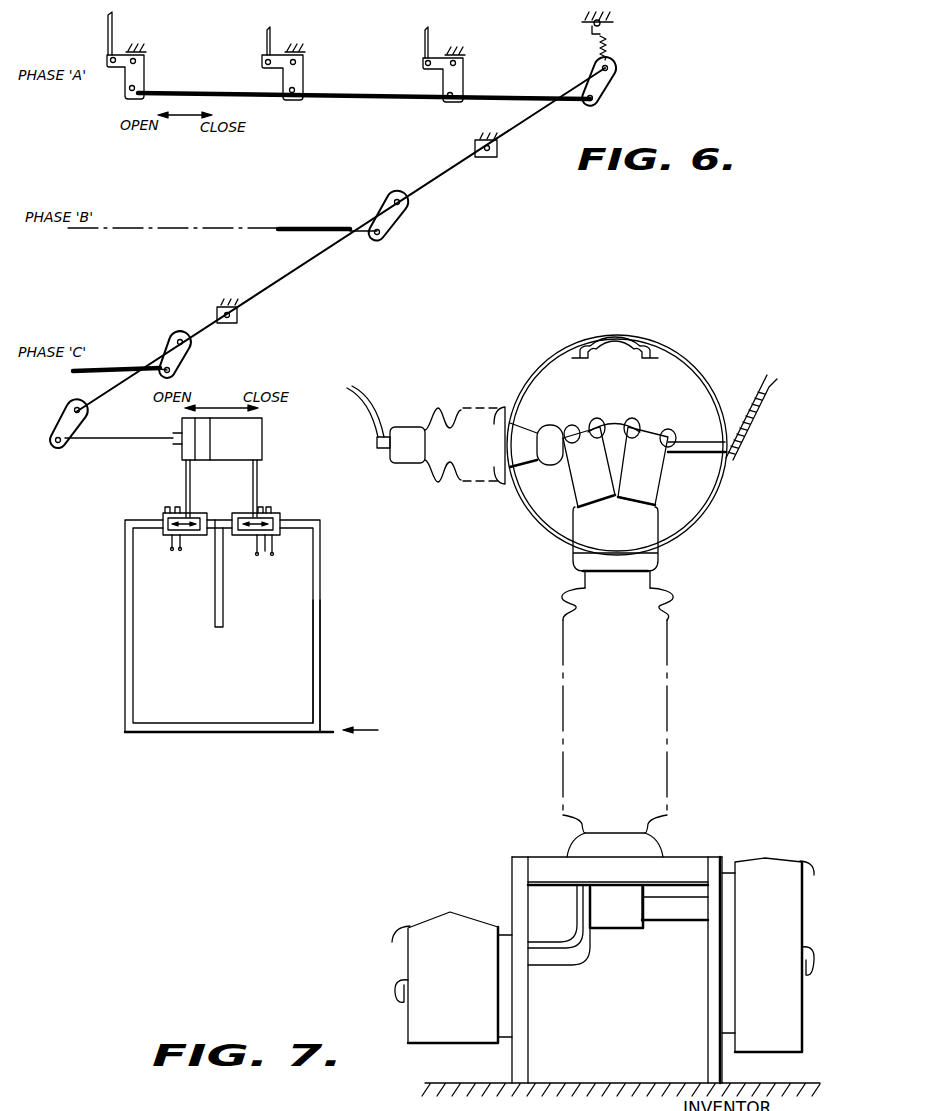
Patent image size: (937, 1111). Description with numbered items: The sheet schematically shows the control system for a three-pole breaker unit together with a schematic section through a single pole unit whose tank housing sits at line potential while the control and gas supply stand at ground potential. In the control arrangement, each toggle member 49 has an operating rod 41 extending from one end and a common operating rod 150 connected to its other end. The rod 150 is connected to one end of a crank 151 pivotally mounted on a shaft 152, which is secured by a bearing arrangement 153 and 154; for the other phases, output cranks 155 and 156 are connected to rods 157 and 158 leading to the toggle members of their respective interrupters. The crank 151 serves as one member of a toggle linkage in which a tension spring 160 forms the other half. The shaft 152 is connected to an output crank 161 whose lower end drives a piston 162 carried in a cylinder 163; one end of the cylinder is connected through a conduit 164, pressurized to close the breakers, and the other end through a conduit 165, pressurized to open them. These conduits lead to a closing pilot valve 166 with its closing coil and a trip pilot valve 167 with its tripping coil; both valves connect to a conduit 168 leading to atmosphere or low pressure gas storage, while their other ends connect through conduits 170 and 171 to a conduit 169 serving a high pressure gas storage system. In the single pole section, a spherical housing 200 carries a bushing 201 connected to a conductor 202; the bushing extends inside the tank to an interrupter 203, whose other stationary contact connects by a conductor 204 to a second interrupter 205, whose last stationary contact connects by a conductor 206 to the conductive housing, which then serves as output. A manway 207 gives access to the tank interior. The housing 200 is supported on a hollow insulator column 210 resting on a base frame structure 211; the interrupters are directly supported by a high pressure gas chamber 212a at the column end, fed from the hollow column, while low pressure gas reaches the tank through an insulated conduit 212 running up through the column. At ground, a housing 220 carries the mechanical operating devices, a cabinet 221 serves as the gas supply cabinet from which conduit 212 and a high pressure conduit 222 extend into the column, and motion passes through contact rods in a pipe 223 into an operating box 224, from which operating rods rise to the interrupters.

In FIG. 6, the operating rod 41 is at (115, 30).
In FIG. 6, the toggle member 49 is at (145, 67).
In FIG. 6, the common operating rod 150 is at (403, 79).
In FIG. 6, the crank 151 is at (612, 82).
In FIG. 6, the shaft 152 is at (537, 117).
In FIG. 6, the bearing arrangement 153 is at (483, 158).
In FIG. 6, the bearing arrangement 154 is at (238, 316).
In FIG. 6, the output crank 155 is at (402, 217).
In FIG. 6, the output crank 156 is at (188, 355).
In FIG. 6, the rod 157 is at (342, 208).
In FIG. 6, the rod 158 is at (128, 363).
In FIG. 6, the tension spring 160 is at (597, 43).
In FIG. 6, the output crank 161 is at (58, 415).
In FIG. 6, the piston 162 is at (205, 437).
In FIG. 6, the cylinder 163 is at (262, 438).
In FIG. 6, the conduit 164 is at (192, 490).
In FIG. 6, the conduit 165 is at (258, 487).
In FIG. 6, the closing pilot valve 166 is at (168, 538).
In FIG. 6, the trip pilot valve 167 is at (263, 560).
In FIG. 6, the conduit 168 is at (224, 607).
In FIG. 6, the conduit 169 is at (323, 737).
In FIG. 6, the conduit 170 is at (125, 670).
In FIG. 6, the conduit 171 is at (317, 648).
In FIG. 7, the spherical housing 200 is at (698, 362).
In FIG. 7, the bushing 201 is at (477, 480).
In FIG. 7, the conductor 202 is at (368, 402).
In FIG. 7, the interrupter 203 is at (577, 492).
In FIG. 7, the conductor 204 is at (618, 422).
In FIG. 7, the second interrupter 205 is at (648, 482).
In FIG. 7, the conductor 206 is at (702, 442).
In FIG. 7, the manway 207 is at (615, 338).
In FIG. 7, the hollow insulator column 210 is at (668, 688).
In FIG. 7, the base frame structure 211 is at (512, 867).
In FIG. 7, the conduit 212 is at (528, 997).
In FIG. 7, the high pressure gas chamber 212a is at (633, 528).
In FIG. 7, the housing 220 is at (793, 850).
In FIG. 7, the cabinet 221 is at (478, 907).
In FIG. 7, the high pressure conduit 222 is at (562, 927).
In FIG. 7, the pipe 223 is at (672, 915).
In FIG. 7, the operating box 224 is at (618, 918).